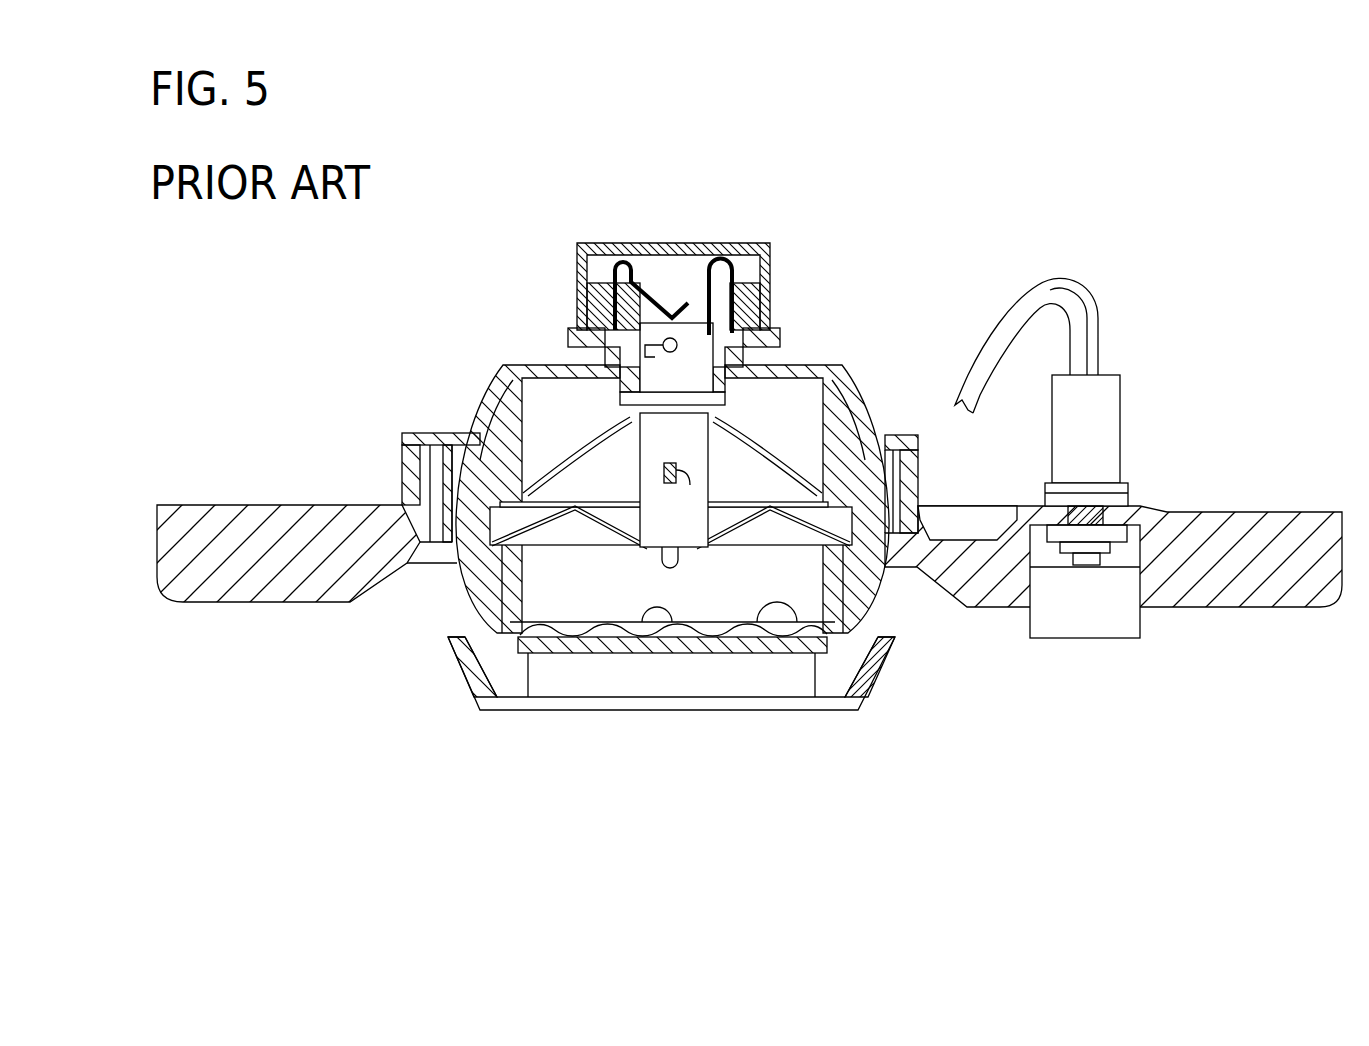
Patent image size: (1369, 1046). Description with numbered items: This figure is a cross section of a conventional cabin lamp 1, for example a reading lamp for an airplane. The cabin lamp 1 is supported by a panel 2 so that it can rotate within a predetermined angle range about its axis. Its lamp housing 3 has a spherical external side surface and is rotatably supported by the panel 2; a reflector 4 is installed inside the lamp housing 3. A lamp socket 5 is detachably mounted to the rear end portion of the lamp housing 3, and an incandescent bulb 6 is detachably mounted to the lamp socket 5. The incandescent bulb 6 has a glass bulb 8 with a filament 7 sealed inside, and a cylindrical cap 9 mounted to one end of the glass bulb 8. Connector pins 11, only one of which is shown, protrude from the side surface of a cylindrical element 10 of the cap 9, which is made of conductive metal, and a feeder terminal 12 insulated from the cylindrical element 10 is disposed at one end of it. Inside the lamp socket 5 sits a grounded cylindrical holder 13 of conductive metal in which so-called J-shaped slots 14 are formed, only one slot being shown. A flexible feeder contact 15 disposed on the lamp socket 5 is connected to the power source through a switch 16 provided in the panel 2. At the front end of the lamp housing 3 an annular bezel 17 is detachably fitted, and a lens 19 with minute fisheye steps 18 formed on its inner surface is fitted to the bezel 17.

The cabin lamp 1 is at (749, 511).
The panel 2 is at (1267, 602).
The lamp housing 3 is at (492, 410).
The reflector 4 is at (710, 452).
The lamp socket 5 is at (728, 382).
The incandescent bulb 6 is at (643, 470).
The filament 7 is at (688, 470).
The glass bulb 8 is at (748, 437).
The cylindrical cap 9 is at (708, 408).
The cylindrical element 10 is at (615, 405).
The connector pin 11 is at (662, 343).
The feeder terminal 12 is at (700, 333).
The cylindrical holder 13 is at (730, 258).
The J-shaped slot 14 is at (597, 363).
The feeder contact 15 is at (653, 285).
The switch 16 is at (1090, 638).
The annular bezel 17 is at (858, 690).
The fisheye step 18 is at (653, 612).
The lens 19 is at (692, 647).